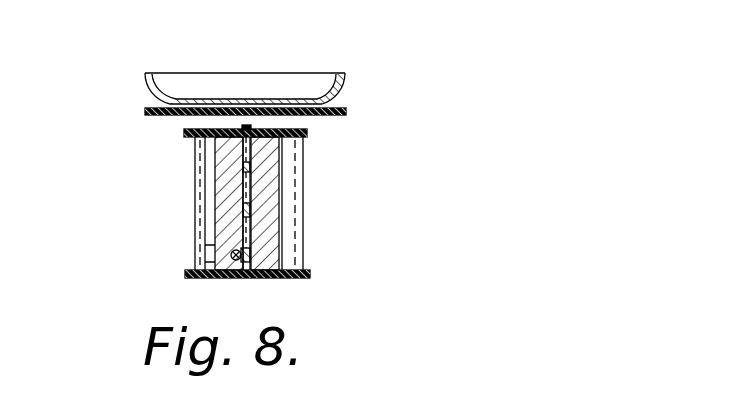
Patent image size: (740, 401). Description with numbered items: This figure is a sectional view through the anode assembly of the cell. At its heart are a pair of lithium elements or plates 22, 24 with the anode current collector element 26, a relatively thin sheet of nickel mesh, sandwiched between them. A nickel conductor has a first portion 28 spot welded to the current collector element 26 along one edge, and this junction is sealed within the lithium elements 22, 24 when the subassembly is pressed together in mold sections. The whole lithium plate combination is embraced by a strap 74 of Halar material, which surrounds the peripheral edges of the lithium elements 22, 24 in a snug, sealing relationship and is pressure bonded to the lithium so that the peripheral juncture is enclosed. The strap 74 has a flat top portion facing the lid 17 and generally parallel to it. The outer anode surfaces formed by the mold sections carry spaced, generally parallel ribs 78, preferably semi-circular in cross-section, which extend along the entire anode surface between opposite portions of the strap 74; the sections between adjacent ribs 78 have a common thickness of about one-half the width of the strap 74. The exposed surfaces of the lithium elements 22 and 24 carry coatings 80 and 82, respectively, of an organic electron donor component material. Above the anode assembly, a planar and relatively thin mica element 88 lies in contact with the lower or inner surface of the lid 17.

The lid 17 is at (227, 100).
The strap 74 is at (266, 128).
The element of mica 88 is at (327, 115).
The ribs 78 is at (200, 160).
The lithium element 22 is at (215, 192).
The lithium element 24 is at (262, 185).
The anode current collector element 26 is at (252, 210).
The coating 80 is at (232, 241).
The coating 82 is at (250, 252).
The first portion of conductor 28 is at (230, 253).